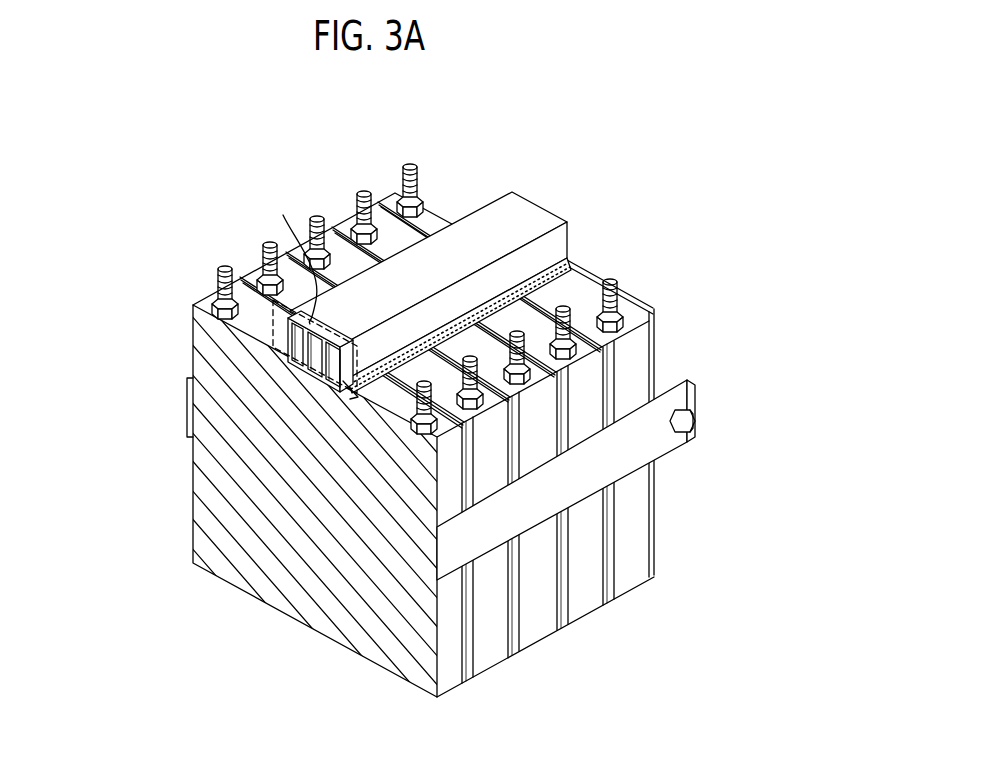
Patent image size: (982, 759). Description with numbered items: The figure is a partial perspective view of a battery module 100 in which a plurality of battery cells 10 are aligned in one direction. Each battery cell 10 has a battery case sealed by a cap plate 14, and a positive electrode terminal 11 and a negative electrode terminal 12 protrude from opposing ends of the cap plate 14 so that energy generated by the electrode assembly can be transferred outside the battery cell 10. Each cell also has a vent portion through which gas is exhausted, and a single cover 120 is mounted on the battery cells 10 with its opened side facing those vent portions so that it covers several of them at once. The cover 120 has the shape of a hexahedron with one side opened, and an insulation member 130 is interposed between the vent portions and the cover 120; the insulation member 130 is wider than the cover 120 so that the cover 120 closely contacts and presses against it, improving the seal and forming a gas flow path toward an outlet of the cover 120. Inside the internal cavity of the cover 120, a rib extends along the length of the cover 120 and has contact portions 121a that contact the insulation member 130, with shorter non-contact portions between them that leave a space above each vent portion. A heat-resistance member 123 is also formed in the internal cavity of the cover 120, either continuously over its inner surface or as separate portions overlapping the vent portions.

The battery module 100 is at (118, 266).
The battery cell 10 is at (592, 582).
The positive electrode terminal 11 is at (408, 168).
The negative electrode terminal 12 is at (616, 285).
The cap plate 14 is at (628, 323).
The cover 120 is at (520, 222).
The contact portions 121a is at (284, 342).
The heat-resistance member 123 is at (323, 381).
The insulation member 130 is at (568, 262).